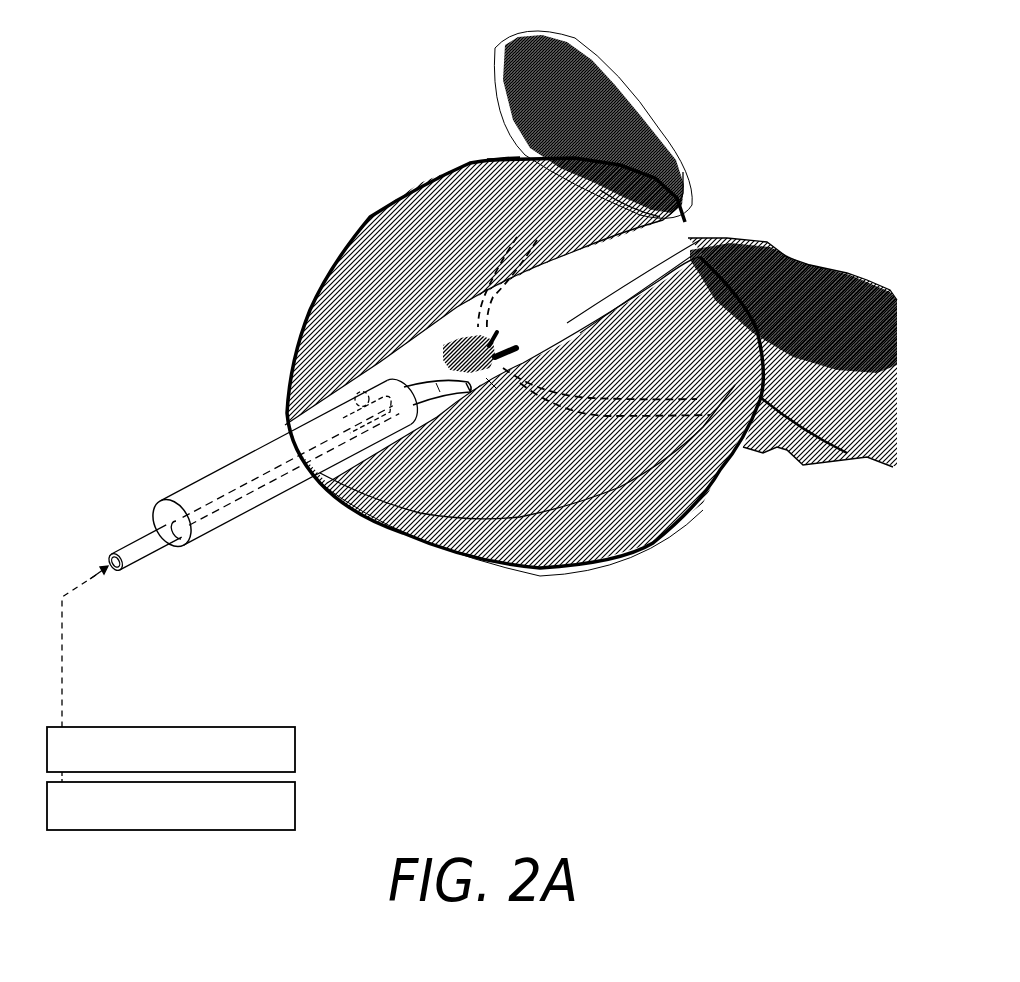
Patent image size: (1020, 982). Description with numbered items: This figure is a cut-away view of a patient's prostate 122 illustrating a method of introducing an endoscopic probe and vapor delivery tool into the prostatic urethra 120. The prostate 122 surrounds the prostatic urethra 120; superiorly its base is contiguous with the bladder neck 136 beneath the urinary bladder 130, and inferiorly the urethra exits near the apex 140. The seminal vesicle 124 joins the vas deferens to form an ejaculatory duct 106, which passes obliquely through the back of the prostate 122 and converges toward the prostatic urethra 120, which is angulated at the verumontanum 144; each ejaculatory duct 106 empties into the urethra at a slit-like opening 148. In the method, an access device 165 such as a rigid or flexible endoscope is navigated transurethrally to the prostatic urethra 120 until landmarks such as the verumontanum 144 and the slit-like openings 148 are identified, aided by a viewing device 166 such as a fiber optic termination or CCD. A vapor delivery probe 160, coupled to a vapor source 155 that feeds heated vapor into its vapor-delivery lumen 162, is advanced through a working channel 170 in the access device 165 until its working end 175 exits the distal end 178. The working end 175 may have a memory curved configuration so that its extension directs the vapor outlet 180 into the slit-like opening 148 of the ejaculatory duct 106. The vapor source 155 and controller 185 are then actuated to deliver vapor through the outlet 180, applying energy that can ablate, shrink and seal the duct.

The ejaculatory duct 106 is at (510, 253).
The prostatic urethra 120 is at (490, 383).
The prostate 122 is at (513, 537).
The seminal vesicle 124 is at (797, 447).
The urinary bladder 130 is at (535, 85).
The bladder neck 136 is at (613, 193).
The apex 140 is at (353, 477).
The verumontanum 144 is at (470, 350).
The slit-like opening 148 is at (483, 333).
The vapor source 155 is at (171, 749).
The vapor delivery probe 160 is at (152, 546).
The vapor-delivery lumen 162 is at (117, 573).
The access device 165 is at (190, 488).
The viewing device 166 is at (372, 393).
The working channel 170 is at (277, 467).
The working end 175 is at (436, 385).
The distal end 178 is at (397, 425).
The vapor outlet 180 is at (470, 383).
The controller 185 is at (171, 801).